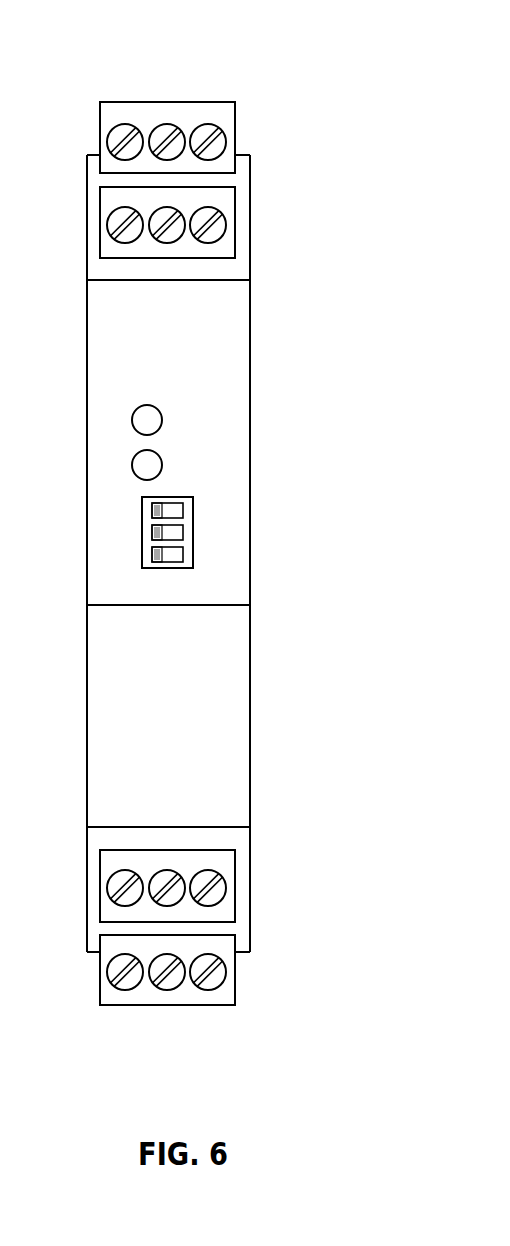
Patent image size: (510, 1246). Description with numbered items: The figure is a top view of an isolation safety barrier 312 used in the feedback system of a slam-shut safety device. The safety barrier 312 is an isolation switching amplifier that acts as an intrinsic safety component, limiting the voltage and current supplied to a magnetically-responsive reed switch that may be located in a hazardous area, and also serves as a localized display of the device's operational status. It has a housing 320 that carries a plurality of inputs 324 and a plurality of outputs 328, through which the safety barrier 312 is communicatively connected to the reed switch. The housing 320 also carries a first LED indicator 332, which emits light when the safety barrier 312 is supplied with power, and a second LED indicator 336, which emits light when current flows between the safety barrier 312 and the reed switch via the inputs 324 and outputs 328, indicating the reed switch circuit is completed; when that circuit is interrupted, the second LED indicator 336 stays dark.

The isolated safety barrier 312 is at (247, 126).
The housing 320 is at (250, 322).
The inputs 324 is at (125, 990).
The outputs 328 is at (125, 124).
The first light-emitting diode (LED) indicator 332 is at (163, 420).
The second light-emitting diode (LED) indicator 336 is at (163, 464).